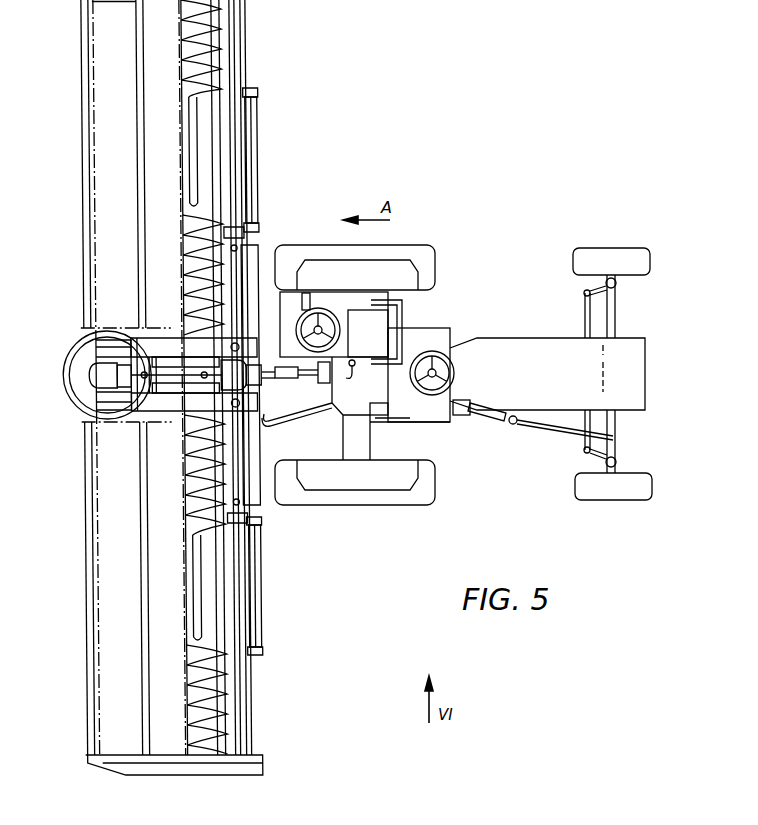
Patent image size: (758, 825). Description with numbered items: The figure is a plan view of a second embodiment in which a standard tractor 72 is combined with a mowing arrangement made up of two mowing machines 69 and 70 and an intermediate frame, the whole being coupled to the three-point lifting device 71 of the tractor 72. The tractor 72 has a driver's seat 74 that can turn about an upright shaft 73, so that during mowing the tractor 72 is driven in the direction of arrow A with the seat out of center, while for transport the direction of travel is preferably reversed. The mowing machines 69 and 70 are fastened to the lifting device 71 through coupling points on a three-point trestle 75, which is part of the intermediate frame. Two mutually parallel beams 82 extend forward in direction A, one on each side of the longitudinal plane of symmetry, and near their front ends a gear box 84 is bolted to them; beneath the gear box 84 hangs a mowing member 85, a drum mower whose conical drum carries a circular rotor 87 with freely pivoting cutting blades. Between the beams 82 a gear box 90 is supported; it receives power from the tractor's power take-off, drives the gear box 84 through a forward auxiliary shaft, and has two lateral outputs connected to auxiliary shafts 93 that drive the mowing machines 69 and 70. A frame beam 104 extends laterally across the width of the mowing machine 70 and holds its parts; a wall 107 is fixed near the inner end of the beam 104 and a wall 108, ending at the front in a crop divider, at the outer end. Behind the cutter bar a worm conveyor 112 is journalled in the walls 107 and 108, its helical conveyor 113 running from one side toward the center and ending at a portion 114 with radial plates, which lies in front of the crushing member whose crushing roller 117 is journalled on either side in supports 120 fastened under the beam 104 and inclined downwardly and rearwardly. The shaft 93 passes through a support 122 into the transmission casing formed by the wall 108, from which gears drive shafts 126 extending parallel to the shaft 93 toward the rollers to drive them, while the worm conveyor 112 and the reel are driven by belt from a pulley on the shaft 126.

The mowing machine 69 is at (78, 177).
The mowing machine 70 is at (81, 584).
The three-point lifting device 71 is at (322, 384).
The tractor 72 is at (547, 338).
The upright shaft 73 is at (354, 373).
The driver's seat 74 is at (402, 316).
The three-point trestle 75 is at (277, 422).
The beams 82 is at (165, 337).
The gear box 84 is at (96, 404).
The mowing member 85 is at (70, 367).
The circular rotor 87 is at (94, 378).
The gear box 90 is at (258, 381).
The auxiliary shafts 93 is at (236, 54).
The frame beam 104 is at (247, 64).
The wall 107 is at (82, 334).
The wall 108 is at (68, 0).
The worm conveyor 112 is at (190, 77).
The helical conveyor 113 is at (195, 265).
The portion of the worm conveyor 114 is at (201, 212).
The crushing roller 117 is at (261, 124).
The supports 120 is at (262, 91).
The support 122 is at (247, 233).
The shafts 126 is at (251, 31).